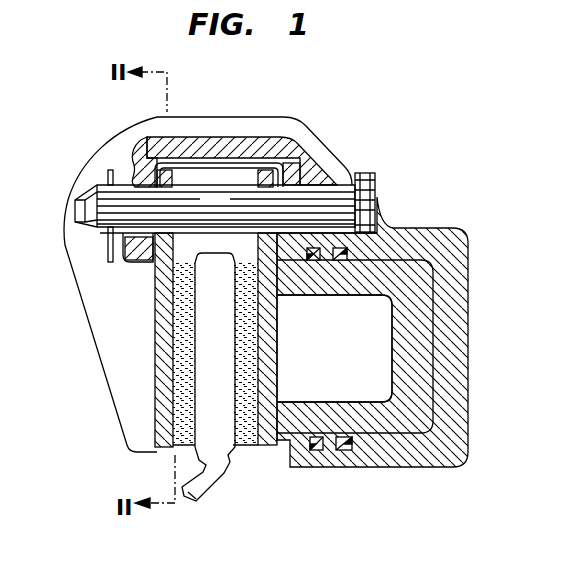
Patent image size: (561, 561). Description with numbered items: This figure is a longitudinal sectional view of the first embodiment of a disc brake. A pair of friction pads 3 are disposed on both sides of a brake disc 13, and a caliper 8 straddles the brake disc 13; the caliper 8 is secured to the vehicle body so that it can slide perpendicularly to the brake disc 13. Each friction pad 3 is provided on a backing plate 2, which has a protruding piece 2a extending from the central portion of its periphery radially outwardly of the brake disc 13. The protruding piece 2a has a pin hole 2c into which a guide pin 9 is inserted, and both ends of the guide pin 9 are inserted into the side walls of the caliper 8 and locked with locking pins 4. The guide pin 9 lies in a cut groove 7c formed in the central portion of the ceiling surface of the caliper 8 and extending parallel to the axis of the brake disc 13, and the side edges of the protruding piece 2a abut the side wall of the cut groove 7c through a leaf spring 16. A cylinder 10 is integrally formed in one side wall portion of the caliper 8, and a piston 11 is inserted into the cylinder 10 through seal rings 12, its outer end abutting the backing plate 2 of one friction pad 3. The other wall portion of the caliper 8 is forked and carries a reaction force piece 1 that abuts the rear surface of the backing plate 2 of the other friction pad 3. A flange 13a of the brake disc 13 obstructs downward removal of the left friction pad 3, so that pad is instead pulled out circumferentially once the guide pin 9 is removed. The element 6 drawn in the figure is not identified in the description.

The reaction force piece 1 is at (130, 435).
The backing plate 2 is at (163, 383).
The protruding piece 2a is at (153, 193).
The pin hole 2c is at (90, 192).
The friction pad 3 is at (176, 298).
The locking pin 4 is at (108, 247).
The cover band 6 is at (214, 137).
The cut groove 7c is at (258, 170).
The caliper 8 is at (308, 131).
The guide pin 9 is at (343, 205).
The cylinder 10 is at (467, 316).
The piston 11 is at (405, 368).
The seal rings 12 is at (343, 450).
The brake disc 13 is at (232, 457).
The flange 13a is at (198, 466).
The leaf spring 16 is at (160, 178).